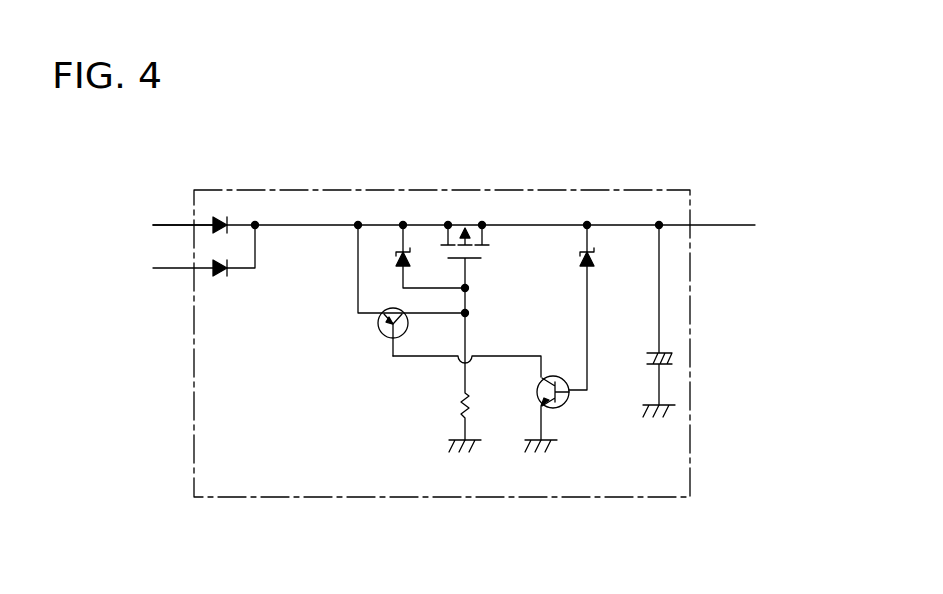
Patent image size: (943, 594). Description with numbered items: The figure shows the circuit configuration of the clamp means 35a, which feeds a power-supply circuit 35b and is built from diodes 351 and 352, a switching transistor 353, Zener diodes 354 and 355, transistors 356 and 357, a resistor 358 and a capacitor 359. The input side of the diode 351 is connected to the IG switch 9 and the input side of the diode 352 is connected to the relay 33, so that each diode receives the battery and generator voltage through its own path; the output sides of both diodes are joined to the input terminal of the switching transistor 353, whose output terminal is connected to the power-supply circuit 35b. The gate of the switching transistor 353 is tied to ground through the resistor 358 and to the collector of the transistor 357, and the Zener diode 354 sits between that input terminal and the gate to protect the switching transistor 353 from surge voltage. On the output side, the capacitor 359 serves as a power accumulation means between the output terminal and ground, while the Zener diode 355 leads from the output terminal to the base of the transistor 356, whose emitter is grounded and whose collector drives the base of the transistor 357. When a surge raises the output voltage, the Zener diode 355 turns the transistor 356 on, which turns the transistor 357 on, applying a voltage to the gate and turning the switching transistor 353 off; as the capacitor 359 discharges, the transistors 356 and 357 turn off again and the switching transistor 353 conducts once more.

The IG switch 9 is at (171, 225).
The relay 33 is at (164, 268).
The clamp means 35a is at (350, 190).
The power-supply circuit 35b is at (472, 225).
The diode 351 is at (217, 218).
The diode 352 is at (217, 282).
The switching transistor 353 is at (455, 225).
The Zener diode 354 is at (396, 262).
The Zener diode 355 is at (587, 263).
The transistor 356 is at (563, 408).
The transistor 357 is at (378, 323).
The resistor 358 is at (460, 403).
The capacitor 359 is at (647, 352).